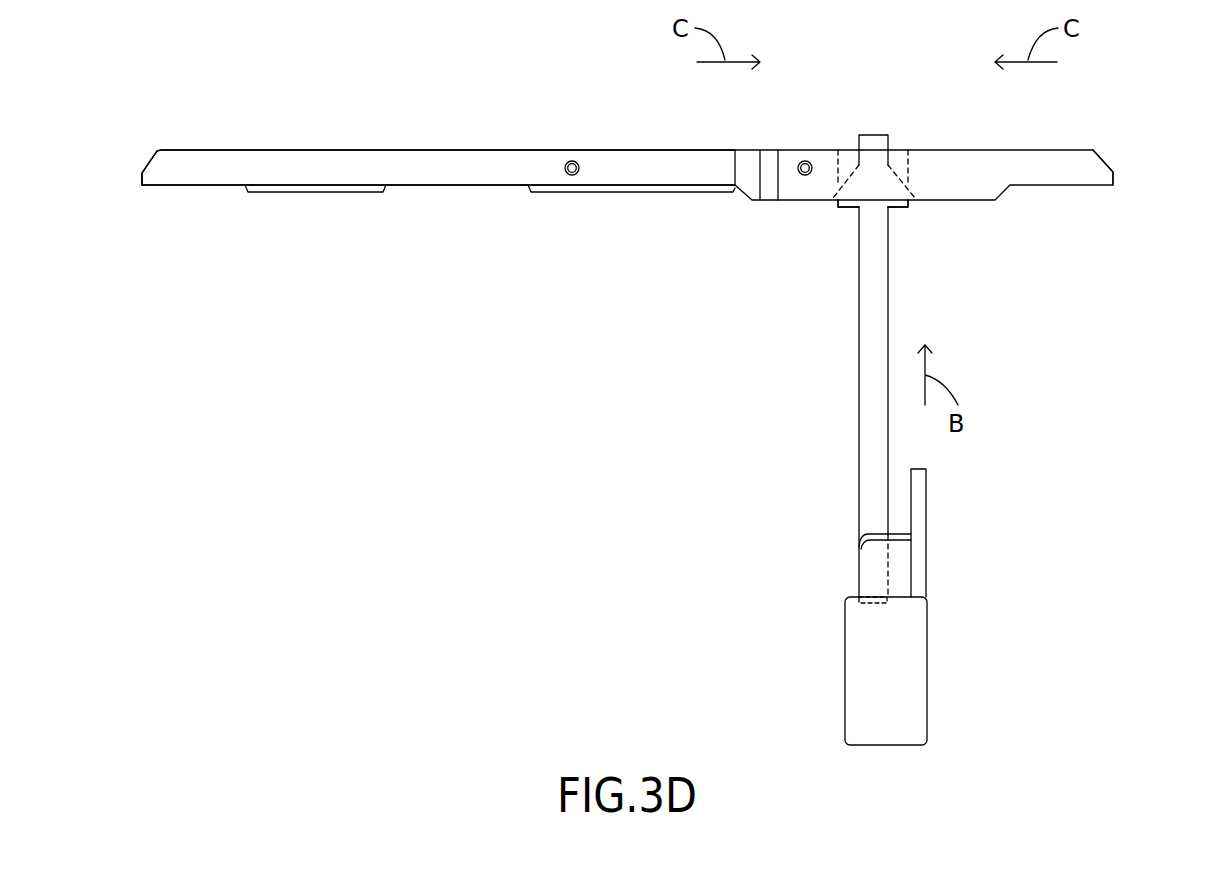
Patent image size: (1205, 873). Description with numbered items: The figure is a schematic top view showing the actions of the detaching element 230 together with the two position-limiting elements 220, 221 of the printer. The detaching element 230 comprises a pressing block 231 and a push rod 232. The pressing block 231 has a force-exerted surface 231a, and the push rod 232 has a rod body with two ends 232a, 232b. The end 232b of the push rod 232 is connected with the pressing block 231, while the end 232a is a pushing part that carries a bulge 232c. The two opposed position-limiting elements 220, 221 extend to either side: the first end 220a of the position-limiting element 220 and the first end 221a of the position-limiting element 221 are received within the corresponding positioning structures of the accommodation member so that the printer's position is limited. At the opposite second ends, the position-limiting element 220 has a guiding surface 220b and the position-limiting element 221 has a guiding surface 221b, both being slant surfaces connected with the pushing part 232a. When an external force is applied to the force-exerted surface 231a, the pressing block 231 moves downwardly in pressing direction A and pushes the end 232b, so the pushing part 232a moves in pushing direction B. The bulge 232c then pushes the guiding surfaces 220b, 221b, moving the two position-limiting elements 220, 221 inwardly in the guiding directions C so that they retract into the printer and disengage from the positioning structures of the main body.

The position-limiting element 220 is at (668, 155).
The first end of the position-limiting element 220a is at (1100, 172).
The guiding surface 220b is at (836, 165).
The position-limiting element 221 is at (515, 148).
The first end of the position-limiting element 221a is at (153, 172).
The guiding surface 221b is at (910, 165).
The detaching element 230 is at (742, 500).
The pressing block 231 is at (927, 607).
The force-exerted surface 231a is at (913, 703).
The push rod 232 is at (862, 359).
The pushing part 232a is at (905, 208).
The end of the push rod 232b is at (873, 602).
The bulge 232c is at (873, 142).